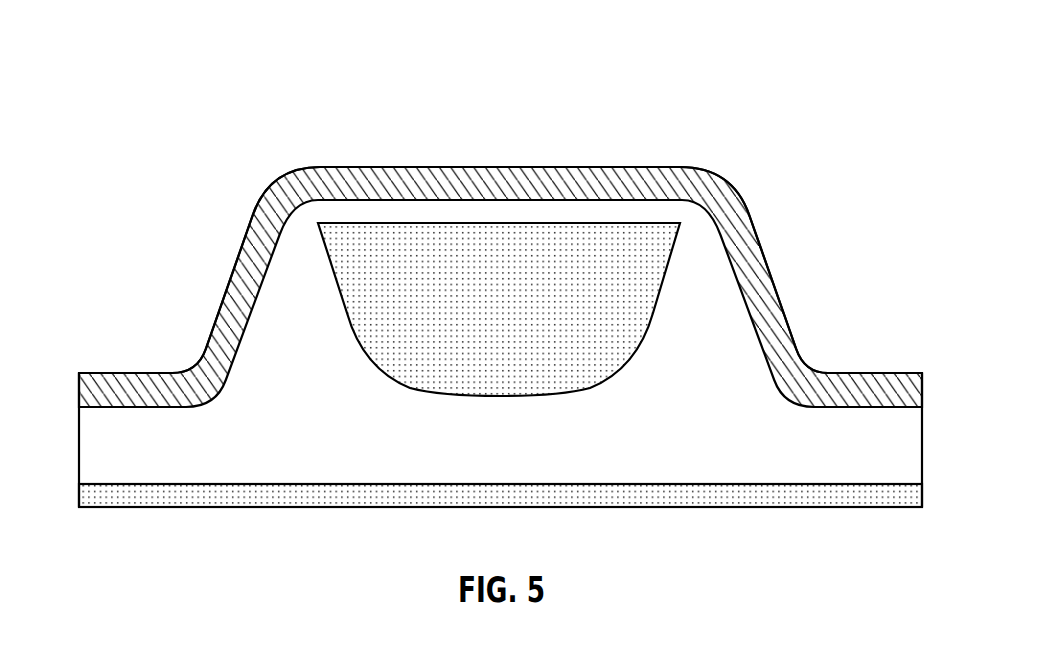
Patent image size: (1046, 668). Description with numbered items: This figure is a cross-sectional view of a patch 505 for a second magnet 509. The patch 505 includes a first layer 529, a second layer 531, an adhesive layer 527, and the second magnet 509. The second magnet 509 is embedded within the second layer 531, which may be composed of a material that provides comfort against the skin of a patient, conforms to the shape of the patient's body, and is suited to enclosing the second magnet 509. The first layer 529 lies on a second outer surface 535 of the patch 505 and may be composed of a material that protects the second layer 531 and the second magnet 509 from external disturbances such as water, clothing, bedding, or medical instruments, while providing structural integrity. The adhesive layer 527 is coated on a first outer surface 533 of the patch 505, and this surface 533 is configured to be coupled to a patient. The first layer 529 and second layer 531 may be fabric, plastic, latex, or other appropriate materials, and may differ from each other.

The patch 505 is at (150, 70).
The second magnet 509 is at (643, 302).
The adhesive layer 527 is at (768, 497).
The first layer 529 is at (93, 387).
The second layer 531 is at (93, 438).
The first outer surface 533 is at (653, 507).
The second outer surface 535 is at (167, 373).